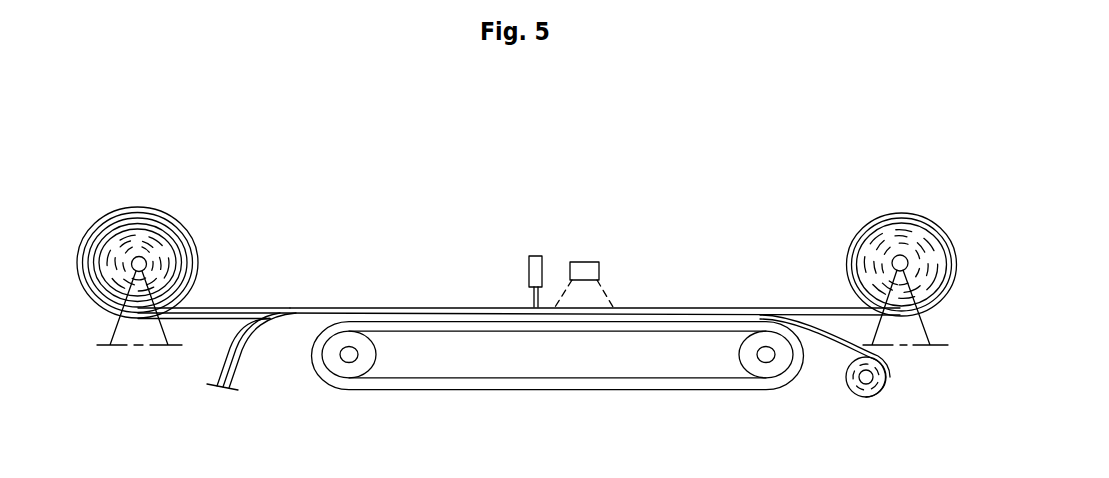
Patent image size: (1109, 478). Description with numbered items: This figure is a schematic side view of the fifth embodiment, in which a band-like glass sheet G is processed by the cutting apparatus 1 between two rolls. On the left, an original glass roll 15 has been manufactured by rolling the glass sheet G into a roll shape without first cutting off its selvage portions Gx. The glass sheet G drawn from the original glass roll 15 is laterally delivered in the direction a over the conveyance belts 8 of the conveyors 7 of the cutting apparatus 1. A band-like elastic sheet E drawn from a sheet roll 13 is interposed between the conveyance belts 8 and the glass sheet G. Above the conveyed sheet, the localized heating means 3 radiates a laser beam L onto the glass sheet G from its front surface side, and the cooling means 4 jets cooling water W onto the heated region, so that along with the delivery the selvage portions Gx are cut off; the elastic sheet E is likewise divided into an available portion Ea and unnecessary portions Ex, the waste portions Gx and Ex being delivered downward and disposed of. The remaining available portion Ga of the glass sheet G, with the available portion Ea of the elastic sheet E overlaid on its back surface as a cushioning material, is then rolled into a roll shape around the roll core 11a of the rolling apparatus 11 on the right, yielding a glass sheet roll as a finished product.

The cutting apparatus 1 is at (658, 228).
The localized heating means 3 is at (589, 259).
The cooling means 4 is at (534, 253).
The conveyor 7 is at (507, 358).
The conveyance belt 8 is at (583, 323).
The rolling apparatus 11 is at (110, 207).
The roll core 11a is at (147, 263).
The sheet roll 13 is at (886, 377).
The original glass roll 15 is at (924, 210).
The glass sheet G is at (775, 306).
The available portion Ga is at (240, 306).
The selvage portion Gx is at (222, 370).
The elastic sheet E is at (829, 338).
The available portion of elastic sheet Ea is at (207, 321).
The unnecessary portion of elastic sheet Ex is at (247, 348).
The laser beam L is at (606, 296).
The cooling water W is at (530, 292).
The conveying direction a is at (305, 336).